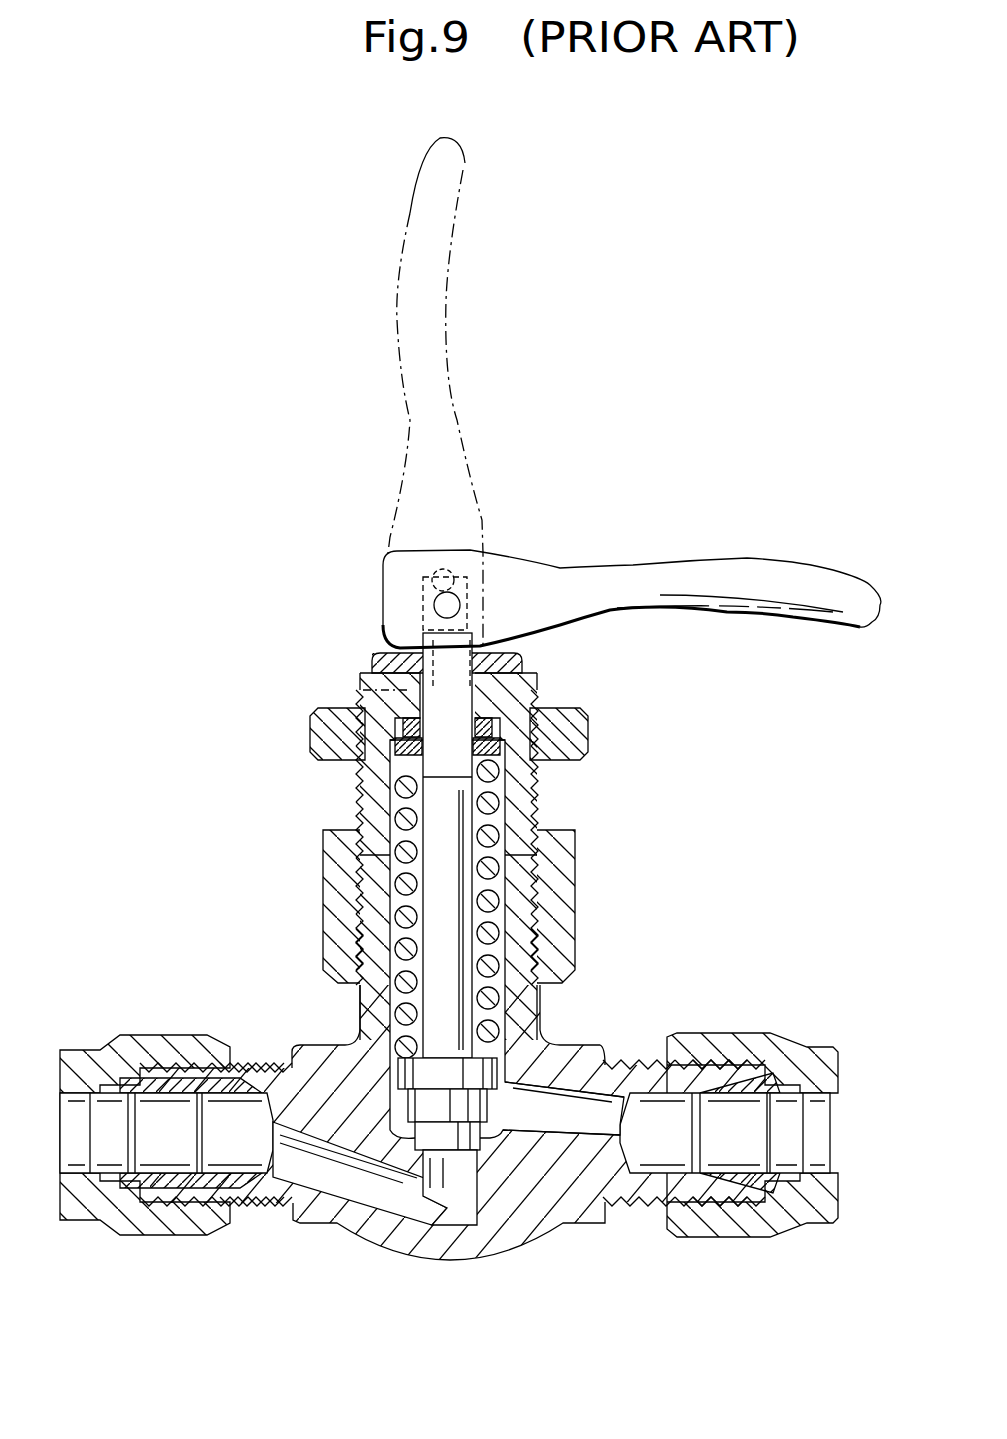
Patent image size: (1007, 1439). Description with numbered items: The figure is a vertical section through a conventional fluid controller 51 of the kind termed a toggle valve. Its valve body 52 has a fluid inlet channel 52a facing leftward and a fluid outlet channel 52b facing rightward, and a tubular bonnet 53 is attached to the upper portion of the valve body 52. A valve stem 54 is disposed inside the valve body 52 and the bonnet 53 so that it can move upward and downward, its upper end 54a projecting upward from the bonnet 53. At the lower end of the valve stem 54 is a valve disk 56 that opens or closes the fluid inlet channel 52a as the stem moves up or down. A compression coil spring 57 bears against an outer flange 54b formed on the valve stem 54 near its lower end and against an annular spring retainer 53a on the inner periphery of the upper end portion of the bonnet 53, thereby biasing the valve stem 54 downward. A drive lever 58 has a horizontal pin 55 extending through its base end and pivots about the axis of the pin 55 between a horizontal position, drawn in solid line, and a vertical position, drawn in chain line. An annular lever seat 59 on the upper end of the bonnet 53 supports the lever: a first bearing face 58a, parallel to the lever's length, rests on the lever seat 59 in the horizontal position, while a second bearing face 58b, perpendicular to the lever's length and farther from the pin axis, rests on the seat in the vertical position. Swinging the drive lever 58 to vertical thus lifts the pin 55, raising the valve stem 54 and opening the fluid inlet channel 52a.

The fluid controller 51 is at (470, 736).
The valve body 52 is at (540, 1008).
The fluid inlet channel 52a is at (340, 1192).
The fluid outlet channel 52b is at (598, 1136).
The tubular bonnet 53 is at (448, 856).
The annular spring retainer 53a is at (363, 778).
The valve stem 54 is at (460, 812).
The upper end of valve stem 54a is at (495, 592).
The outer flange 54b is at (398, 1063).
The horizontal pin 55 is at (437, 578).
The valve disk 56 is at (467, 1130).
The compression coil spring 57 is at (365, 887).
The drive lever 58 is at (448, 322).
The first bearing face 58a is at (533, 688).
The second bearing face 58b is at (383, 598).
The annular lever seat 59 is at (372, 662).